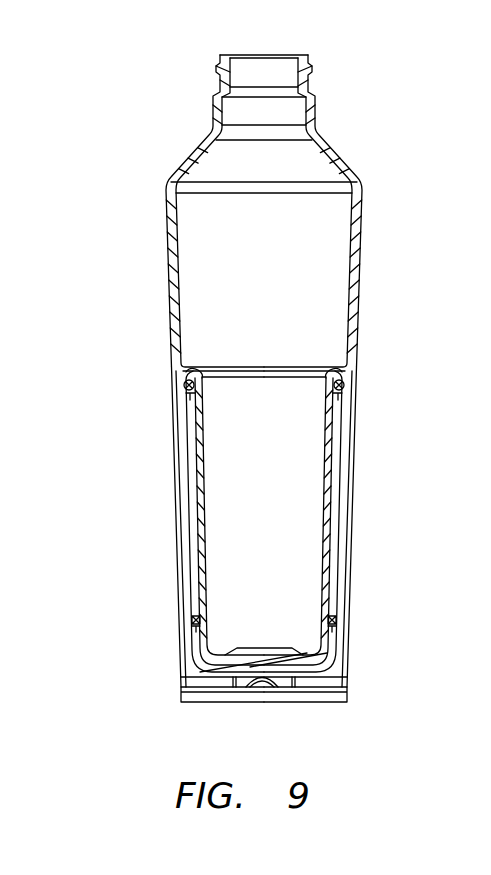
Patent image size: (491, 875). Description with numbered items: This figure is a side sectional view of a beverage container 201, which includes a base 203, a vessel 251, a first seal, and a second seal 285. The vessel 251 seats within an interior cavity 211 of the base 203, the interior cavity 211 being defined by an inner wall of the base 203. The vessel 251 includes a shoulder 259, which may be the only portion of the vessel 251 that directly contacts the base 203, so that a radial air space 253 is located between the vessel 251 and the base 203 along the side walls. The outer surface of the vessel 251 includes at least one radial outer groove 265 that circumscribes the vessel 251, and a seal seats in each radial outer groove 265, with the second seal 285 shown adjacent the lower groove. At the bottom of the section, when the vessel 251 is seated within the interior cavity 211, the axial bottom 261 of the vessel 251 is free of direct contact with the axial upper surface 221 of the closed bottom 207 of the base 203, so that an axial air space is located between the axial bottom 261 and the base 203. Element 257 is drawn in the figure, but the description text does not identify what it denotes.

The beverage container 201 is at (152, 53).
The vessel 251 is at (127, 235).
The base 203 is at (141, 495).
The interior cavity 211 is at (341, 485).
The radial air space 253 is at (193, 452).
The inner wall 257 is at (200, 573).
The shoulder 259 is at (190, 368).
The radial outer groove 265 is at (185, 386).
The second seal 285 is at (340, 393).
The axial bottom 261 is at (197, 675).
The closed bottom 207 is at (197, 702).
The axial upper surface 221 is at (286, 688).